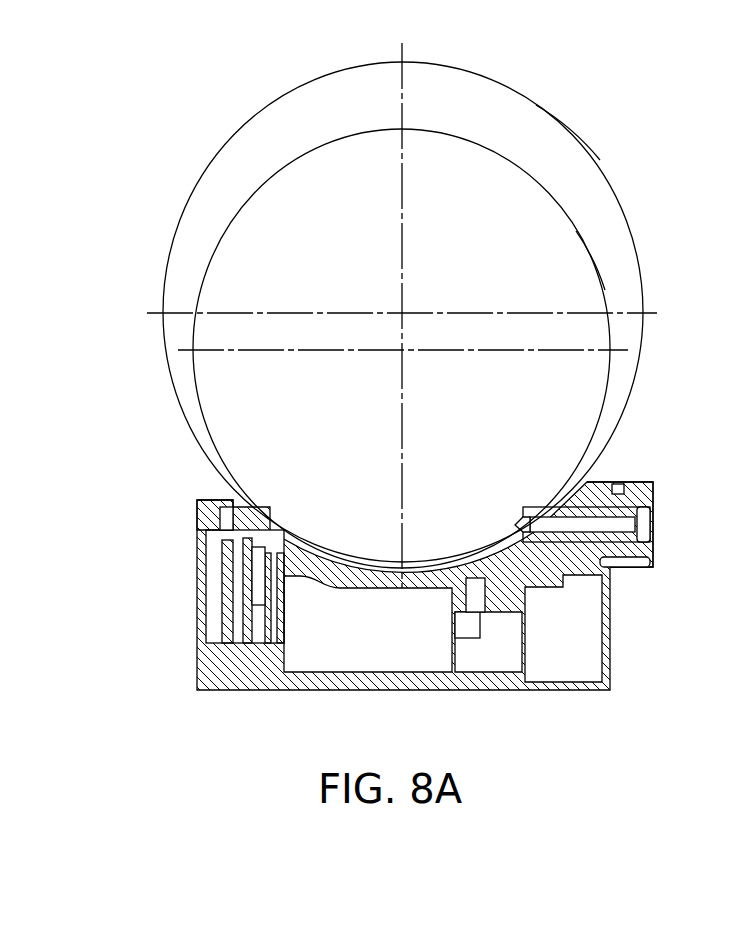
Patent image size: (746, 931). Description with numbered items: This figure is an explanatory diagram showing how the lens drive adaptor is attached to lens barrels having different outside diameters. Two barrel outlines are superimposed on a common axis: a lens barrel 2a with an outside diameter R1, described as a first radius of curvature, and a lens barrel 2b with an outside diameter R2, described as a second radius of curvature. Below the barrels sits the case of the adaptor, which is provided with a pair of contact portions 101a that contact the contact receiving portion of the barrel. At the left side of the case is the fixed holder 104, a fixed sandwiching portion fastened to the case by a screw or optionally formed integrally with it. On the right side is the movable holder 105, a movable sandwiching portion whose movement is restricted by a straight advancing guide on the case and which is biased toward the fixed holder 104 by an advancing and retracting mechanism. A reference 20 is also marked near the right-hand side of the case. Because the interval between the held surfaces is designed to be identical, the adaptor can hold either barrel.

The lens barrel 2a is at (497, 80).
The lens barrel 2b is at (553, 200).
The outside diameter R1 is at (536, 105).
The outside diameter R2 is at (576, 231).
The lens holding flange 20 is at (665, 524).
The fixed holder 104 is at (256, 506).
The movable holder 105 is at (520, 524).
The contact portions 101a is at (563, 588).